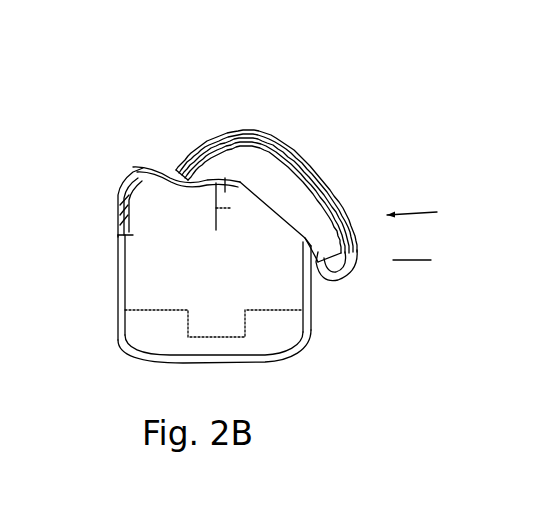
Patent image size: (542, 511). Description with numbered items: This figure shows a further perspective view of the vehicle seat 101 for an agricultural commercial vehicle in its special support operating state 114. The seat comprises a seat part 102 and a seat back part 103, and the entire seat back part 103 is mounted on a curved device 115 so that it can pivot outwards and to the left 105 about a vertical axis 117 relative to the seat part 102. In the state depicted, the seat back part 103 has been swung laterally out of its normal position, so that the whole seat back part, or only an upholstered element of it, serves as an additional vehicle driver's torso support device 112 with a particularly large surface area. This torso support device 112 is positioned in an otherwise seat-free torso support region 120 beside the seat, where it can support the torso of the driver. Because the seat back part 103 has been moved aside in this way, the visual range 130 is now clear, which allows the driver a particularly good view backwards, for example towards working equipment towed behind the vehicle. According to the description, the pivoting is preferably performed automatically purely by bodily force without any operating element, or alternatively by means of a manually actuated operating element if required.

The vehicle seat 101 is at (371, 87).
The seat part 102 is at (118, 325).
The seat back part 103 is at (300, 158).
The direction outwards and to the left 105 is at (412, 250).
The additional vehicle driver's torso support device 112 is at (338, 192).
The special support operating state 114 is at (313, 382).
The curved device 115 is at (172, 181).
The vertical axis 117 is at (217, 260).
The seat-free torso support region 120 is at (430, 215).
The visual range 130 is at (138, 147).